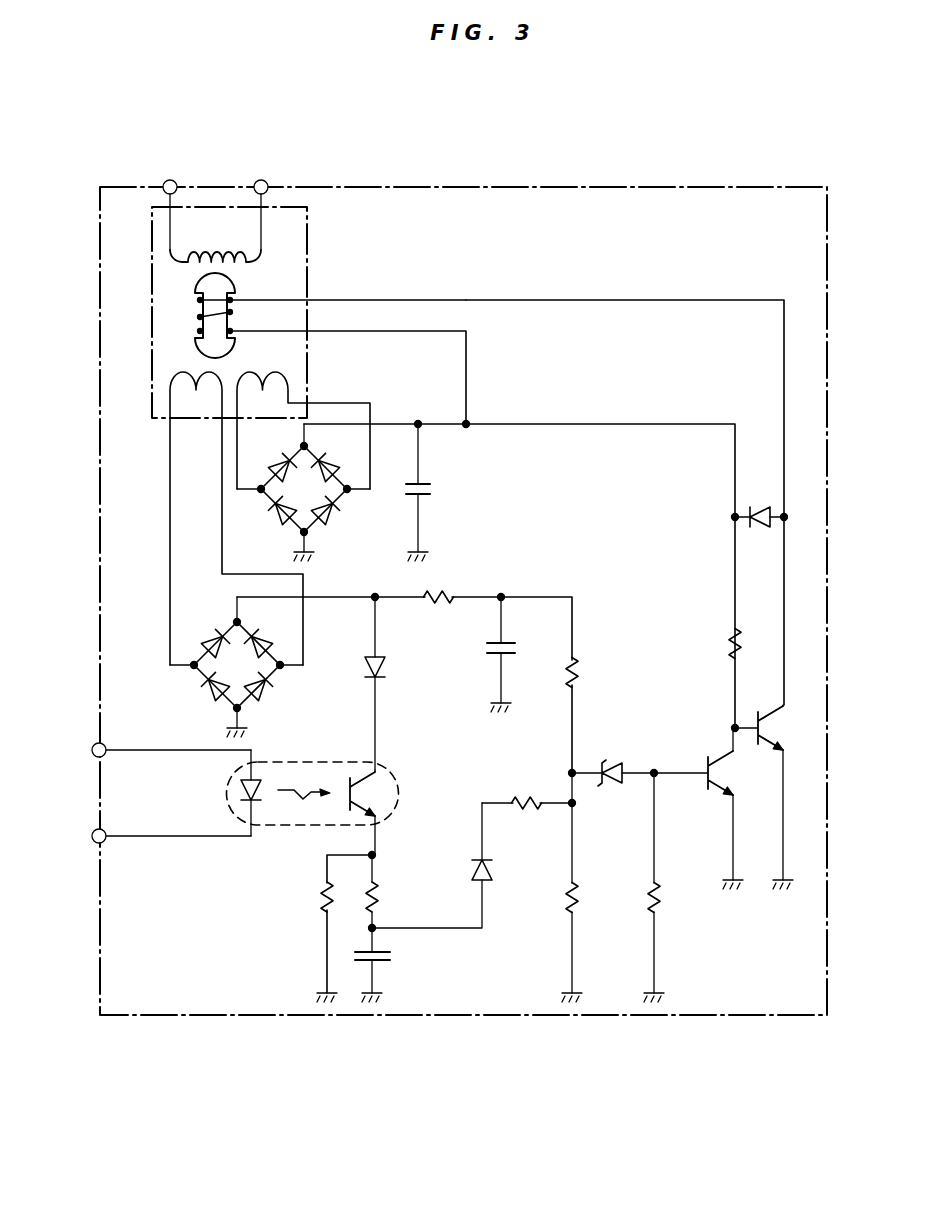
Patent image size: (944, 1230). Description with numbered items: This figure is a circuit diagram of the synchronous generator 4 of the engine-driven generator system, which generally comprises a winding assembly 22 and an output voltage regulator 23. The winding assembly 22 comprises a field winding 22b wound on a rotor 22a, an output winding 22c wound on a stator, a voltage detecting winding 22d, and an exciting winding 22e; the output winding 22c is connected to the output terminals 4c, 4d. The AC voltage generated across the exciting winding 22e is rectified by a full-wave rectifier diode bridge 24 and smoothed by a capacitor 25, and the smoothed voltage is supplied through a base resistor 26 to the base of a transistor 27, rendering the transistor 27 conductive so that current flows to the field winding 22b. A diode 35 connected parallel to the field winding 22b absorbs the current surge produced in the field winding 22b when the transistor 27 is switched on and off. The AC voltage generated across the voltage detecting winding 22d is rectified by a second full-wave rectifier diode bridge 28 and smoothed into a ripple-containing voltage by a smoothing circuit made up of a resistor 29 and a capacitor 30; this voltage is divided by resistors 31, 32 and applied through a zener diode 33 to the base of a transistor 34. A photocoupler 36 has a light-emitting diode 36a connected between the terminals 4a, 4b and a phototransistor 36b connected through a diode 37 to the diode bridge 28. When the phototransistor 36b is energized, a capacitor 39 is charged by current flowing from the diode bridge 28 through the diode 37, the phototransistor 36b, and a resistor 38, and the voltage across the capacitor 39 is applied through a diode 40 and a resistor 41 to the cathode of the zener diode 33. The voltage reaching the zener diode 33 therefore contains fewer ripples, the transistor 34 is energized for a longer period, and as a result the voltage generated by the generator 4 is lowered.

The synchronous generator 4 is at (632, 189).
The terminal 4a is at (92, 753).
The terminal 4b is at (92, 839).
The output terminal 4c is at (170, 180).
The output terminal 4d is at (266, 181).
The winding assembly 22 is at (307, 255).
The rotor 22a is at (236, 278).
The field winding 22b is at (232, 318).
The output winding 22c is at (243, 245).
The voltage detecting winding 22d is at (190, 368).
The exciting winding 22e is at (270, 366).
The output voltage regulator 23 is at (514, 299).
The full-wave rectifier diode bridge 24 is at (332, 522).
The capacitor 25 is at (432, 490).
The base resistor 26 is at (730, 640).
The transistor 27 is at (770, 728).
The full-wave rectifier diode bridge 28 is at (268, 688).
The resistor 29 is at (444, 590).
The capacitor 30 is at (486, 650).
The resistor 31 is at (580, 672).
The resistor 32 is at (578, 910).
The zener diode 33 is at (612, 786).
The transistor 34 is at (706, 768).
The diode 35 is at (756, 530).
The photocoupler 36 is at (310, 828).
The light-emitting diode 36a is at (240, 792).
The phototransistor 36b is at (362, 800).
The diode 37 is at (382, 676).
The resistor 38 is at (382, 892).
The capacitor 39 is at (392, 960).
The diode 40 is at (490, 888).
The resistor 41 is at (528, 812).